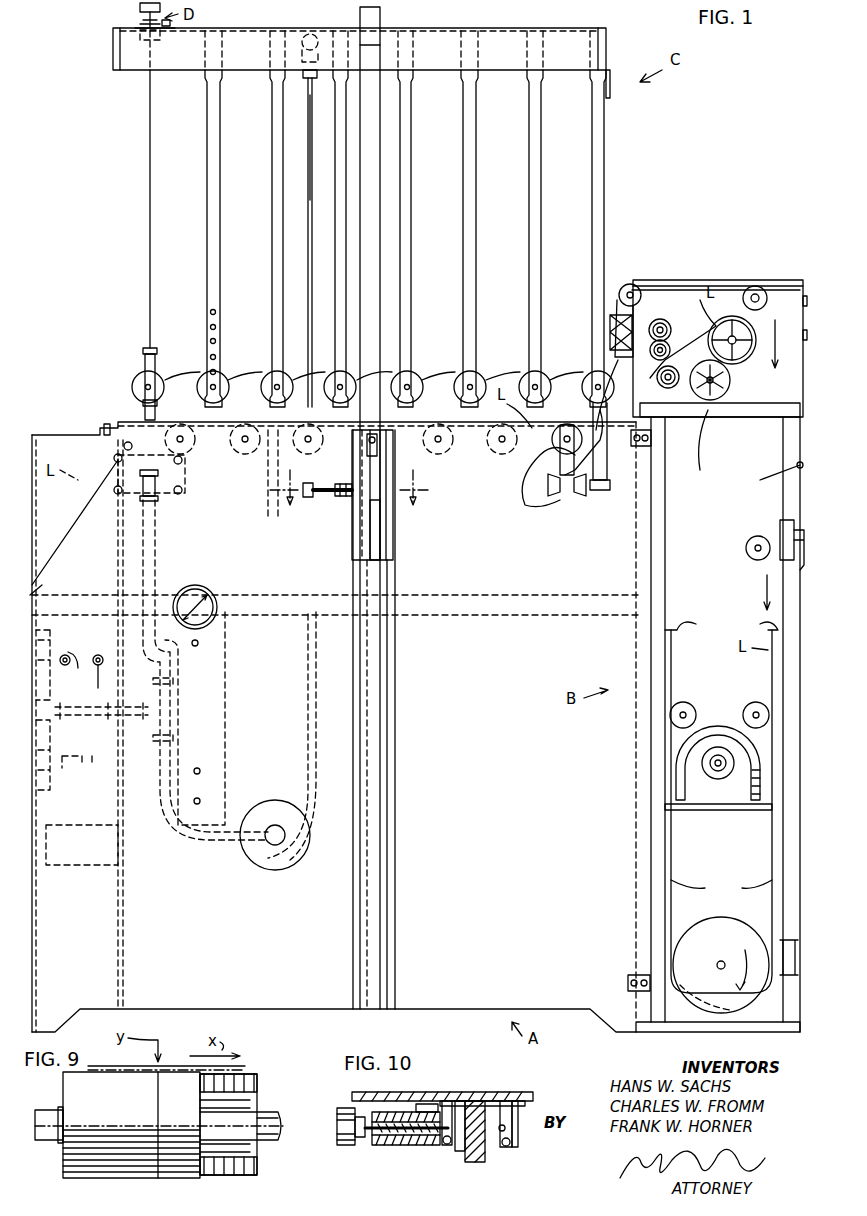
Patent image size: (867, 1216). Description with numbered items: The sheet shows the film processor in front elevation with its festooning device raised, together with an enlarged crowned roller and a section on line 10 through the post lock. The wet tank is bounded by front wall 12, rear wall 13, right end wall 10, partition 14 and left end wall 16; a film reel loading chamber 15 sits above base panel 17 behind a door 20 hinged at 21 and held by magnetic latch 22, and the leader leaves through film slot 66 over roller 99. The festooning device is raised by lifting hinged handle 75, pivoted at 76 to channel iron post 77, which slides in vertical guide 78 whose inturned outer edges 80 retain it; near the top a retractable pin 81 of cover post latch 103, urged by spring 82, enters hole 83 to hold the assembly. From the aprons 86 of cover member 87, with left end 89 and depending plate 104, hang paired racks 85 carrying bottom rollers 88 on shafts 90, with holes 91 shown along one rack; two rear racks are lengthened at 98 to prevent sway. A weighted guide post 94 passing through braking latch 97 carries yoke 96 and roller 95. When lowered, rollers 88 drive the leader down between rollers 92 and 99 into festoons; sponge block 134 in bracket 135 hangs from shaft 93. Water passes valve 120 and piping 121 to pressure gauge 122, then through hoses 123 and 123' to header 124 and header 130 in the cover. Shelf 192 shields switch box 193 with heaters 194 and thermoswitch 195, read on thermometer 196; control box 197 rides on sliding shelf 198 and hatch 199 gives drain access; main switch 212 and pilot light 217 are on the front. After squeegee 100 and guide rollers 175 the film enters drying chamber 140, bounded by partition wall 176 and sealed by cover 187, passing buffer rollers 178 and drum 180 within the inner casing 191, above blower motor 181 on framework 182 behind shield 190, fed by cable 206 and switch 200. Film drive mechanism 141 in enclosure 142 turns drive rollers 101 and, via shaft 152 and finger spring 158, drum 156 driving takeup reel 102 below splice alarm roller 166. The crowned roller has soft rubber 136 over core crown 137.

In FIG. 1, the braking latch 97 is at (142, 20).
In FIG. 1, the header 130 is at (306, 30).
In FIG. 1, the aprons 86 is at (502, 34).
In FIG. 1, the cover member 87 is at (602, 28).
In FIG. 1, the left end 89 is at (114, 50).
In FIG. 1, the depending plate 104 is at (610, 92).
In FIG. 1, the rubber hose 123' is at (269, 387).
In FIG. 1, the paired racks 85 is at (340, 202).
In FIG. 1, the channel iron post 77 is at (380, 230).
In FIG. 10, the channel iron post 77 is at (518, 1134).
In FIG. 1, the vertical guide 78 is at (395, 752).
In FIG. 1, the pivot 76 is at (393, 470).
In FIG. 1, the retractable pin 81 is at (388, 520).
In FIG. 10, the retractable pin 81 is at (460, 1152).
In FIG. 1, the slidable weighted guide post 94 is at (150, 240).
In FIG. 9, the slidable weighted guide post 94 is at (78, 1172).
In FIG. 1, the holes 91 is at (216, 312).
In FIG. 1, the roller 95 is at (136, 372).
In FIG. 1, the yoke 96 is at (158, 404).
In FIG. 1, the shafts 90 is at (275, 391).
In FIG. 1, the bottom rollers 88 is at (278, 384).
In FIG. 1, the door 20 is at (38, 433).
In FIG. 1, the magnetic latch 22 is at (104, 428).
In FIG. 1, the film reel loading chamber 15 is at (94, 463).
In FIG. 1, the roller 99 is at (128, 442).
In FIG. 1, the film slot 66 is at (114, 478).
In FIG. 1, the header 124 is at (128, 504).
In FIG. 1, the hinge 21 is at (36, 592).
In FIG. 1, the base panel 17 is at (100, 600).
In FIG. 1, the partition 14 is at (124, 910).
In FIG. 1, the shelf 192 is at (492, 608).
In FIG. 1, the rubber hose 123 is at (175, 499).
In FIG. 1, the switch box 193 is at (228, 722).
In FIG. 1, the thermometer 196 is at (195, 585).
In FIG. 1, the thermoswitch 195 is at (199, 643).
In FIG. 1, the heating elements 194 is at (201, 800).
In FIG. 1, the drain valve access door 199 is at (288, 870).
In FIG. 1, the control box 197 is at (112, 846).
In FIG. 1, the left end wall 16 is at (36, 806).
In FIG. 1, the pressure gauge 122 is at (60, 652).
In FIG. 1, the pilot light 217 is at (94, 679).
In FIG. 1, the toggle main switch 212 is at (72, 681).
In FIG. 1, the valve 120 is at (110, 720).
In FIG. 1, the piping 121 is at (108, 740).
In FIG. 1, the sliding shelf 198 is at (78, 866).
In FIG. 1, the rollers 92 is at (196, 443).
In FIG. 1, the shaft 93 is at (248, 445).
In FIG. 9, the shaft 93 is at (268, 1142).
In FIG. 1, the extensions 98 is at (604, 520).
In FIG. 1, the spring 82 is at (338, 483).
In FIG. 10, the spring 82 is at (402, 1146).
In FIG. 1, the cover post latch 103 is at (295, 534).
In FIG. 10, the cover post latch 103 is at (366, 1155).
In FIG. 1, the hinged handle 75 is at (370, 518).
In FIG. 10, the hinged handle 75 is at (480, 1160).
In FIG. 1, the right end wall 10 is at (634, 658).
In FIG. 1, the bracket 135 is at (558, 490).
In FIG. 1, the second sponge block 134 is at (545, 512).
In FIG. 1, the rear wall 13 is at (574, 506).
In FIG. 1, the squeegee 100 is at (618, 278).
In FIG. 1, the film drive mechanism 141 is at (772, 266).
In FIG. 1, the enclosure 142 is at (705, 282).
In FIG. 1, the guide rollers 175 is at (630, 284).
In FIG. 1, the splice alarm roller 166 is at (652, 322).
In FIG. 1, the shaft 152 is at (698, 375).
In FIG. 1, the film drive rollers 101 is at (658, 384).
In FIG. 1, the takeup reel 102 is at (742, 356).
In FIG. 1, the takeup reel drive drum 156 is at (716, 398).
In FIG. 1, the finger spring 158 is at (696, 440).
In FIG. 1, the partition wall 176 is at (722, 590).
In FIG. 1, the film drying chamber 140 is at (683, 561).
In FIG. 1, the low heat bi-pole switch 200 is at (790, 466).
In FIG. 1, the three wire cable 206 is at (800, 522).
In FIG. 1, the buffer rollers 178 is at (745, 548).
In FIG. 1, the casing 191 is at (721, 803).
In FIG. 1, the shield 190 is at (690, 740).
In FIG. 1, the blower motor 181 is at (692, 770).
In FIG. 1, the framework 182 is at (724, 806).
In FIG. 1, the drum 180 is at (695, 975).
In FIG. 1, the cover 187 is at (768, 1008).
In FIG. 1, the front wall 12 is at (306, 1012).
In FIG. 10, the front wall 12 is at (502, 1090).
In FIG. 9, the crowned core 137 is at (155, 1104).
In FIG. 9, the soft rubber 136 is at (250, 1082).
In FIG. 10, the hole 83 is at (442, 1108).
In FIG. 10, the outer edges 80 is at (448, 1150).